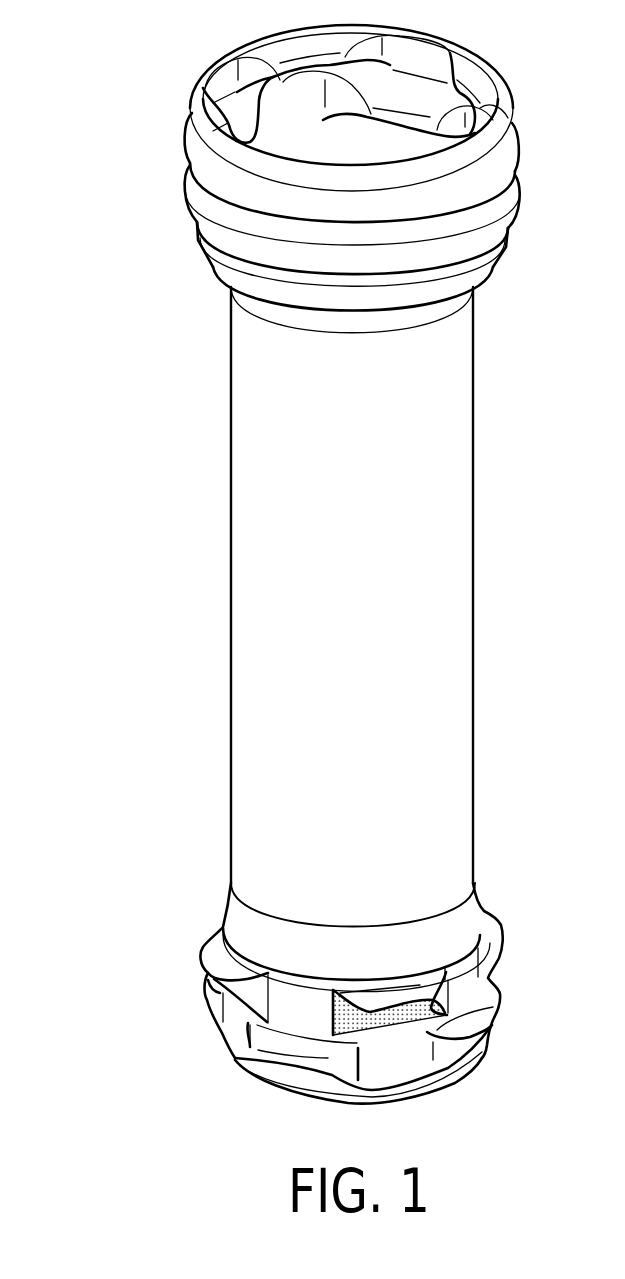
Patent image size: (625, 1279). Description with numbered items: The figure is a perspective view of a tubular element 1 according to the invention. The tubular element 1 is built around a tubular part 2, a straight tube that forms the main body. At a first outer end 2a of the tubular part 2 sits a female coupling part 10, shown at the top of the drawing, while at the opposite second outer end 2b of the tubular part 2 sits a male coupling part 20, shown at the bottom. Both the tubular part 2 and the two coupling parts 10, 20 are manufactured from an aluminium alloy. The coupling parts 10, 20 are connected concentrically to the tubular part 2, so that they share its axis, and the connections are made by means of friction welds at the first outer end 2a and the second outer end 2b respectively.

The tubular element 1 is at (110, 56).
The female coupling part 10 is at (150, 180).
The tubular part 2 is at (256, 575).
The first outer end 2a is at (231, 292).
The second outer end 2b is at (250, 863).
The male coupling part 20 is at (150, 971).